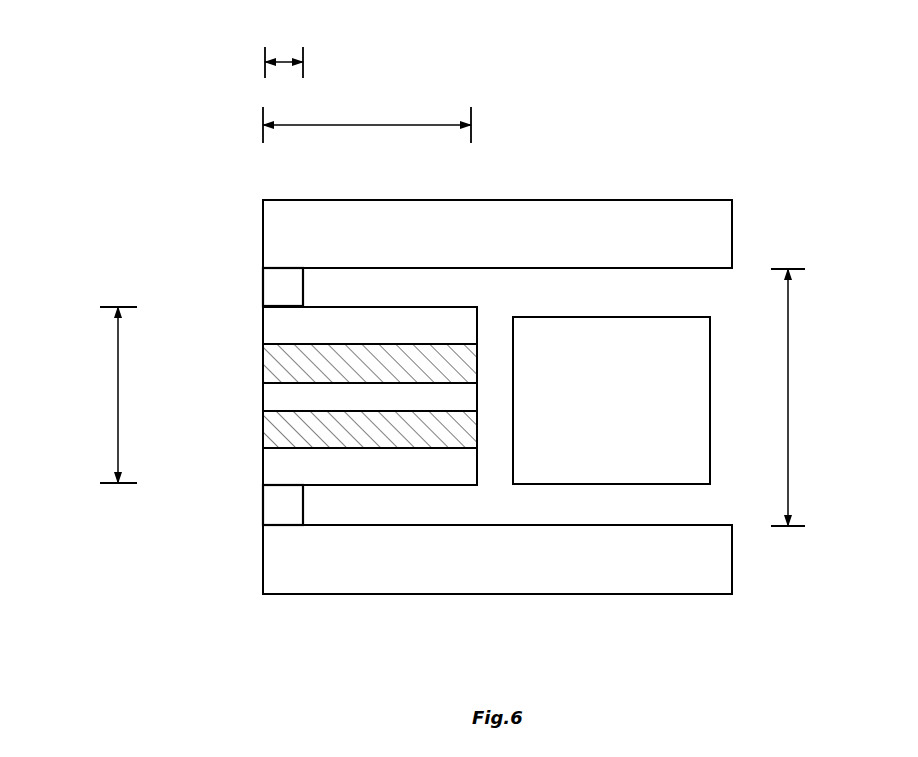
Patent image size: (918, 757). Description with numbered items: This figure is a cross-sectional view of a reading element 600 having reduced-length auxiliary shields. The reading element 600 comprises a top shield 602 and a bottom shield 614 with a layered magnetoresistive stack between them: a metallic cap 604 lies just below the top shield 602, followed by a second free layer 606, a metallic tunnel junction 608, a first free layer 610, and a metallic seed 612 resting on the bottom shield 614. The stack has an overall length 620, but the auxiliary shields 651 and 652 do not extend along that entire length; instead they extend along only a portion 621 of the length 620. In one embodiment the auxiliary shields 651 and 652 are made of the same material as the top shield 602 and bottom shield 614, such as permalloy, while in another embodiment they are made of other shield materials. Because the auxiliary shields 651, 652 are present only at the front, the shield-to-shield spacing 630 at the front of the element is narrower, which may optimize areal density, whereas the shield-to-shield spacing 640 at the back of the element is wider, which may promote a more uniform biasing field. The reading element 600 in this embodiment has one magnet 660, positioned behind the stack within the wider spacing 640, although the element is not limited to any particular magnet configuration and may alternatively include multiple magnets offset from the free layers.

The reading element 600 is at (688, 78).
The top shield 602 is at (341, 228).
The metallic cap 604 is at (276, 323).
The second free layer 606 is at (280, 366).
The metallic tunnel junction 608 is at (274, 399).
The first free layer 610 is at (282, 436).
The metallic seed 612 is at (276, 472).
The bottom shield 614 is at (290, 553).
The length of the magnetoresistive element 620 is at (324, 125).
The portion of the length 621 is at (284, 62).
The shield-to-shield spacing at the front 630 is at (114, 414).
The shield-to-shield spacing at the back 640 is at (786, 428).
The auxiliary shield 651 is at (280, 296).
The auxiliary shield 652 is at (288, 506).
The magnet 660 is at (650, 346).